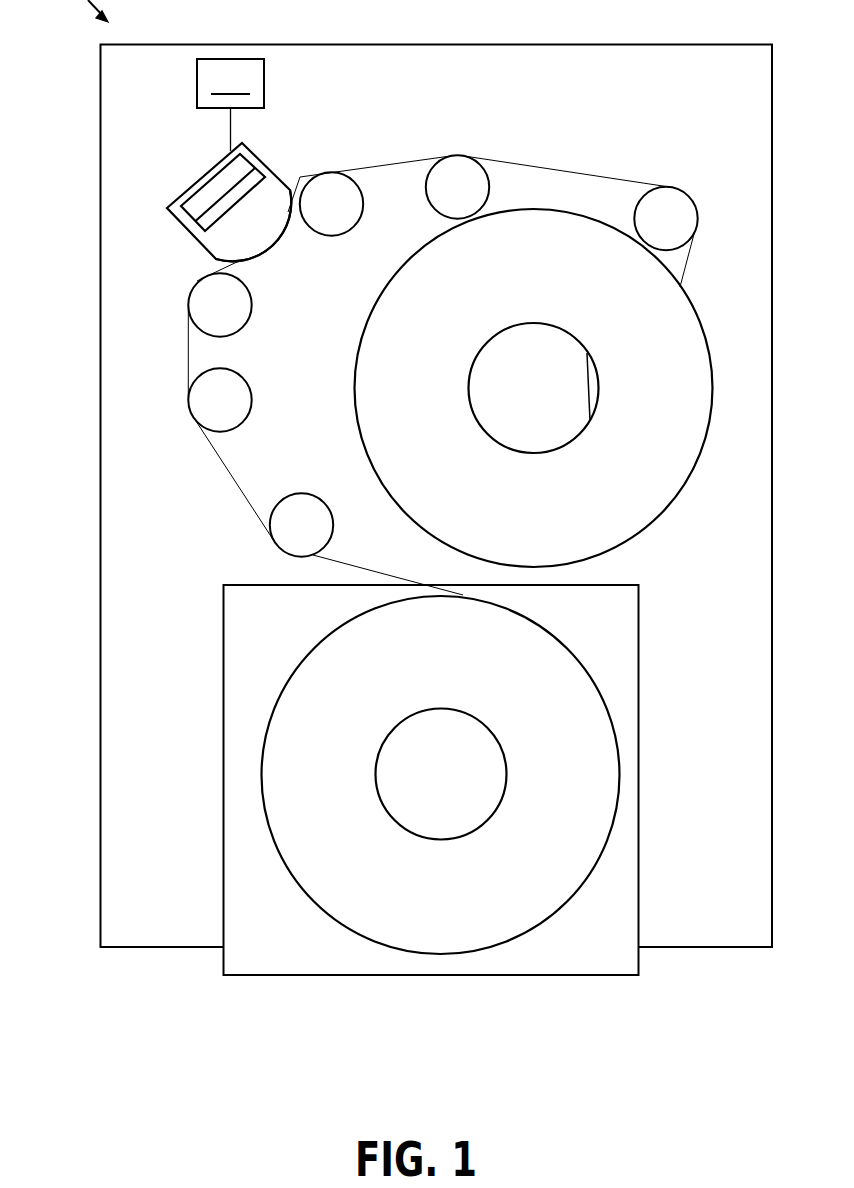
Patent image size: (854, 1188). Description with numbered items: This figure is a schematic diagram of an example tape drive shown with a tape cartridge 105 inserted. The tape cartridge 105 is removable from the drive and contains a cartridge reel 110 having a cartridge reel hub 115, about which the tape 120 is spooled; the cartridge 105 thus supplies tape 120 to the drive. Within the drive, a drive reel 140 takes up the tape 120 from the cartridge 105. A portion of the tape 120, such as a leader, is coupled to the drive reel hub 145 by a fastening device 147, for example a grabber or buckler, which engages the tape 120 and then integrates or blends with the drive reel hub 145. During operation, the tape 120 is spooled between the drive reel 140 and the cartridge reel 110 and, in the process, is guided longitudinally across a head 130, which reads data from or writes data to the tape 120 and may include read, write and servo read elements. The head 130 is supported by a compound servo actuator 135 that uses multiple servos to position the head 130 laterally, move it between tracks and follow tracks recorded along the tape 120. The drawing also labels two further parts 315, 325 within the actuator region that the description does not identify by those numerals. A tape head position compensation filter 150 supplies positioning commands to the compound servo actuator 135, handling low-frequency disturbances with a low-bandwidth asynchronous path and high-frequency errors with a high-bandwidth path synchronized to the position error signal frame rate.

The tape cartridge 105 is at (223, 587).
The cartridge reel 110 is at (307, 653).
The cartridge reel hub 115 is at (377, 757).
The tape 120 is at (570, 178).
The head 130 is at (289, 196).
The compound servo actuator 135 is at (207, 172).
The drive reel 140 is at (352, 397).
The drive reel hub 145 is at (473, 358).
The fastening device 147 is at (588, 357).
The tape head position compensation filter 150 is at (230, 105).
The first print head element 315 is at (205, 198).
The second print head element 325 is at (207, 227).